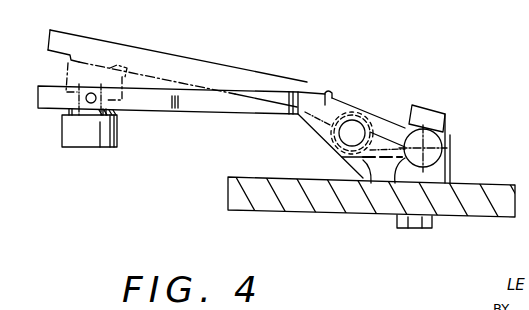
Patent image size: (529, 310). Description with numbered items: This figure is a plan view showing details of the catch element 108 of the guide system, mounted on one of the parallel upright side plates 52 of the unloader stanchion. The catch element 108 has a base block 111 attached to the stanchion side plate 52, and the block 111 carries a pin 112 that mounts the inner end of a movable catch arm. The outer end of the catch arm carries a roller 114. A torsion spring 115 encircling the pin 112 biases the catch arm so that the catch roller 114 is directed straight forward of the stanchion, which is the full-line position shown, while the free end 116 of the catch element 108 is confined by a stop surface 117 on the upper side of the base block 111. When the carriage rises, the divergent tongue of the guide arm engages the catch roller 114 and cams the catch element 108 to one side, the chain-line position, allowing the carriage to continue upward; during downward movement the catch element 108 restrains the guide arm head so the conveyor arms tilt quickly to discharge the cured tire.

The side plate 52 is at (317, 193).
The catch element 108 is at (213, 102).
The base block 111 is at (443, 177).
The pin 112 is at (345, 139).
The roller 114 is at (97, 140).
The torsion spring 115 is at (365, 110).
The free end 116 is at (441, 147).
The stop surface 117 is at (435, 113).